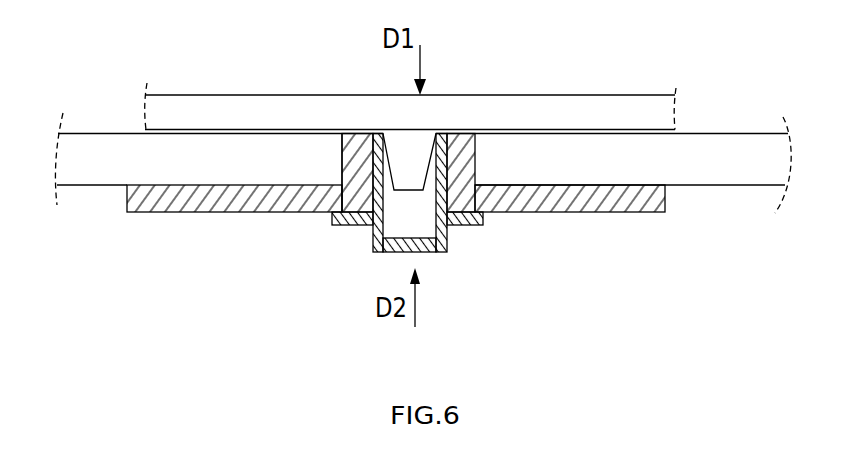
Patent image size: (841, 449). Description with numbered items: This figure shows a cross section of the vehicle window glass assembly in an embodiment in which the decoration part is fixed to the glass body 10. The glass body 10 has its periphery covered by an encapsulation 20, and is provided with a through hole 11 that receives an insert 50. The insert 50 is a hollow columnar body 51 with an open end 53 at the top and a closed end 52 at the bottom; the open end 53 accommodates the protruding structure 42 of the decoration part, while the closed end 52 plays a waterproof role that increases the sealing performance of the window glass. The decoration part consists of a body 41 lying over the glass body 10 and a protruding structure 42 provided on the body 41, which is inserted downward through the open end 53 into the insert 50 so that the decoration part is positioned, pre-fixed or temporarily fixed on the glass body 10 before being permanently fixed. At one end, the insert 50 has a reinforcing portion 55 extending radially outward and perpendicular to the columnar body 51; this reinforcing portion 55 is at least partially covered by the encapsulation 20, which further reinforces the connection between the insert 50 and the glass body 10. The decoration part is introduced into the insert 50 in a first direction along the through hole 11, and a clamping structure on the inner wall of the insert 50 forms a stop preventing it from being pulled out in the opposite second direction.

The glass body 10 is at (182, 163).
The first through hole 11 is at (342, 152).
The encapsulation 20 is at (589, 213).
The body 41 is at (569, 117).
The protruding structure 42 is at (408, 157).
The insert 50 is at (373, 248).
The columnar body 51 is at (382, 184).
The closed end 52 is at (427, 255).
The open end 53 is at (450, 133).
The reinforcing portion 55 is at (483, 220).